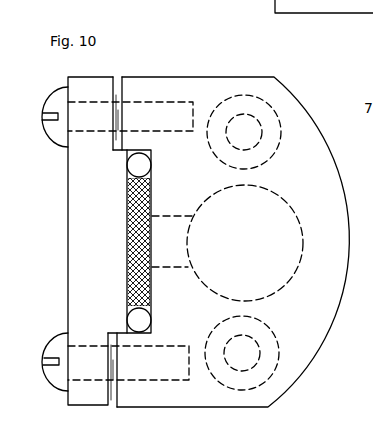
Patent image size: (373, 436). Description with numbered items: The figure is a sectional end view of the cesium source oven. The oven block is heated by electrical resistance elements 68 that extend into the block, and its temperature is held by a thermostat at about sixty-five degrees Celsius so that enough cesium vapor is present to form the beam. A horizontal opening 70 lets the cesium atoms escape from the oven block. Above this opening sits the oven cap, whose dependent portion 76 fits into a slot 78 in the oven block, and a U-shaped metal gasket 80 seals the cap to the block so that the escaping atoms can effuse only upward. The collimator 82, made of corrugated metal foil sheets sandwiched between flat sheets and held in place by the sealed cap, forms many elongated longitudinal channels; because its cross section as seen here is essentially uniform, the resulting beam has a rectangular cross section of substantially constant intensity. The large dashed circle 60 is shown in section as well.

The central bore 60 is at (293, 213).
The electrical resistance elements 68 is at (258, 143).
The horizontal opening 70 is at (189, 266).
The dependent portion 76 is at (113, 226).
The slot 78 is at (152, 152).
The U-shaped metal gasket 80 is at (144, 170).
The collimator 82 is at (152, 193).